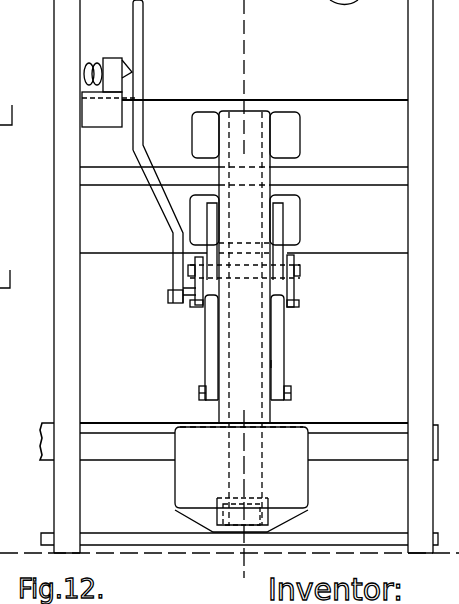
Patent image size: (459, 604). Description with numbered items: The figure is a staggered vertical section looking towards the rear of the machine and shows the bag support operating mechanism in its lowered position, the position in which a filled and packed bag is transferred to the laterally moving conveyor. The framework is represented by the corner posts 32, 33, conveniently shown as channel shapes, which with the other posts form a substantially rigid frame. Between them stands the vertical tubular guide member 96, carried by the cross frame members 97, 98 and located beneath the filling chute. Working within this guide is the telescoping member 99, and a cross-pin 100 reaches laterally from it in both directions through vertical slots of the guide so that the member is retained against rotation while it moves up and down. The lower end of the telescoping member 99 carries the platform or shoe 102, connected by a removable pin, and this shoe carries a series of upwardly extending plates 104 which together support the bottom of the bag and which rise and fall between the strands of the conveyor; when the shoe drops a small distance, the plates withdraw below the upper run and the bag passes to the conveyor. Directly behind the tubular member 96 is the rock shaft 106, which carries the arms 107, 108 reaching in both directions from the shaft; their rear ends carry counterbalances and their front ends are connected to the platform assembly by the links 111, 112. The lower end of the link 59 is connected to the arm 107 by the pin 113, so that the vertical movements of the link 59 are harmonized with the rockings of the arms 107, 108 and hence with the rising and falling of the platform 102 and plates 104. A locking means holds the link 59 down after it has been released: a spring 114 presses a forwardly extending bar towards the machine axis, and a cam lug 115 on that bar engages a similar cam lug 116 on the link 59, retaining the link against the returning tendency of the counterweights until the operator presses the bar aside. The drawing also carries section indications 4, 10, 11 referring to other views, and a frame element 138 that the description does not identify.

The corner post 32 is at (420, 308).
The corner post 33 is at (66, 262).
The link 59 is at (152, 200).
The vertical tubular guide member 96 is at (253, 345).
The cross frame member 97 is at (339, 120).
The cross frame member 98 is at (343, 242).
The telescoping member 99 is at (284, 364).
The cross-pin 100 is at (198, 392).
The platform or shoe 102 is at (294, 528).
The upwardly extending plates 104 is at (192, 472).
The rock shaft 106 is at (300, 278).
The arm 107 is at (178, 285).
The arm 108 is at (294, 291).
The link 111 is at (205, 330).
The link 112 is at (284, 325).
The pin 113 is at (170, 298).
The spring 114 is at (88, 64).
The cam lug 115 is at (126, 68).
The cam lug 116 is at (124, 80).
The lower cross rail 138 is at (100, 452).
The section line 4 is at (270, 563).
The section line 10 is at (440, 173).
The section line 11 is at (360, 392).